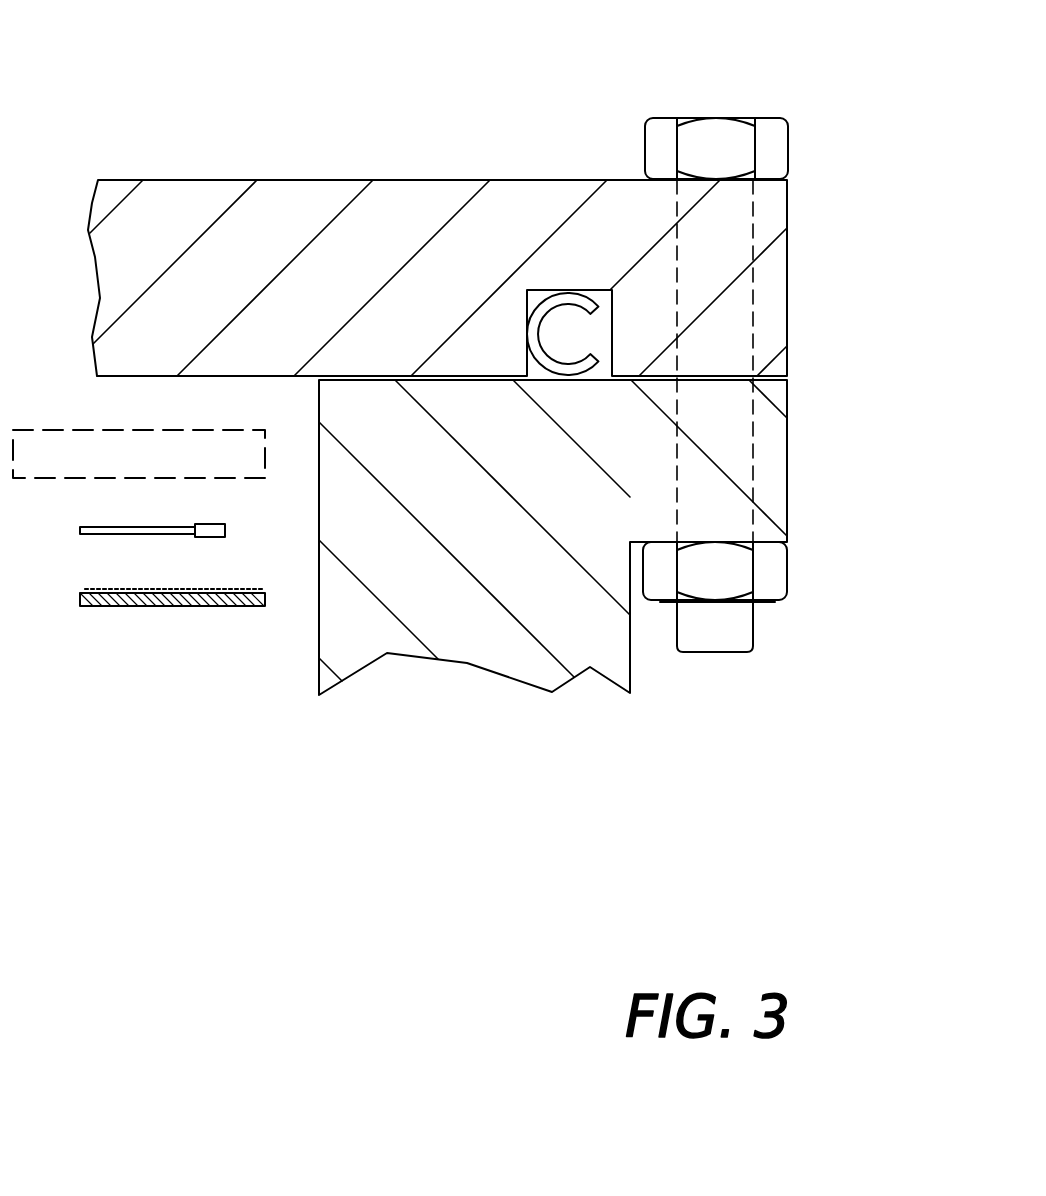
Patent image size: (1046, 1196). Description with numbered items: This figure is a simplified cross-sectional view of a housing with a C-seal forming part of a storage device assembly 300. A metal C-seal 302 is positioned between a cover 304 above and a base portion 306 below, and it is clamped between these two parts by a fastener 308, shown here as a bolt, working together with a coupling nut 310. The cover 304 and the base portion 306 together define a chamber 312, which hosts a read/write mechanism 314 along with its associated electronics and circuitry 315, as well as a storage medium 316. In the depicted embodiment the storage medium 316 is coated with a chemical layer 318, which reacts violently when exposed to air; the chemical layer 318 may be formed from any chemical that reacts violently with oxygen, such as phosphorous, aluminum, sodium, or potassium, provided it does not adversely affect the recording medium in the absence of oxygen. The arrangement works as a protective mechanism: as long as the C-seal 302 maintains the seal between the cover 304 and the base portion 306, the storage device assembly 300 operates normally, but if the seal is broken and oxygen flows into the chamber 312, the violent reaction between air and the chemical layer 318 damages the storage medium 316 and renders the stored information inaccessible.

The storage device assembly 300 is at (100, 116).
The metal C-seal 302 is at (541, 294).
The cover 304 is at (789, 296).
The base portion 306 is at (789, 460).
The fastener 308 is at (789, 153).
The coupling nut 310 is at (777, 569).
The chamber 312 is at (201, 730).
The read/write mechanism 314 is at (110, 525).
The electronics and circuitry 315 is at (110, 415).
The storage medium 316 is at (200, 607).
The chemical layer 318 is at (145, 590).